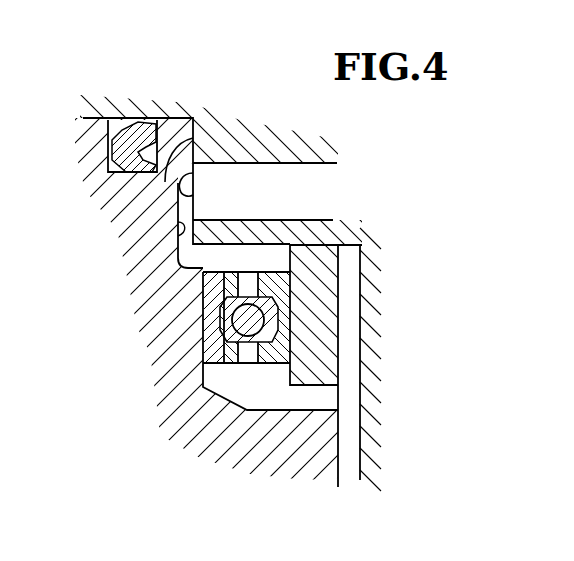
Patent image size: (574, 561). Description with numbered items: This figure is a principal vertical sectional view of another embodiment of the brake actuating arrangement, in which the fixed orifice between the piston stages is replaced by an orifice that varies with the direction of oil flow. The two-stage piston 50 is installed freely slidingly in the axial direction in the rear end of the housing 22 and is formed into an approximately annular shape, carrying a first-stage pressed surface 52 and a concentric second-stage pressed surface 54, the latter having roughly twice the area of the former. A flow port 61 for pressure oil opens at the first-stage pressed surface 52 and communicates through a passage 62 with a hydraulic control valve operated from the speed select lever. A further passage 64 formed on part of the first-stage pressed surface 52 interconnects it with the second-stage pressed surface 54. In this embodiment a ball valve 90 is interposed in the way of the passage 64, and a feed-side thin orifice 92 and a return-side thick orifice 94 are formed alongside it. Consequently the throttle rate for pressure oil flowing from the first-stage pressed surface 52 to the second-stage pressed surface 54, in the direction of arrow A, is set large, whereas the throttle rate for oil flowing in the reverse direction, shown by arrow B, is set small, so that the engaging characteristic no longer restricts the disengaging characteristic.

The housing 22 is at (140, 108).
The flow port 61 is at (195, 138).
The first-stage pressed surface 52 is at (178, 228).
The passage 62 is at (318, 203).
The passage 64 is at (249, 292).
The two-stage piston 50 is at (138, 315).
The return-side thick orifice 94 is at (208, 280).
The feed-side thin orifice 92 is at (207, 330).
The ball valve 90 is at (250, 329).
The second-stage pressed surface 54 is at (340, 448).
The arrow A is at (250, 273).
The arrow B is at (248, 350).